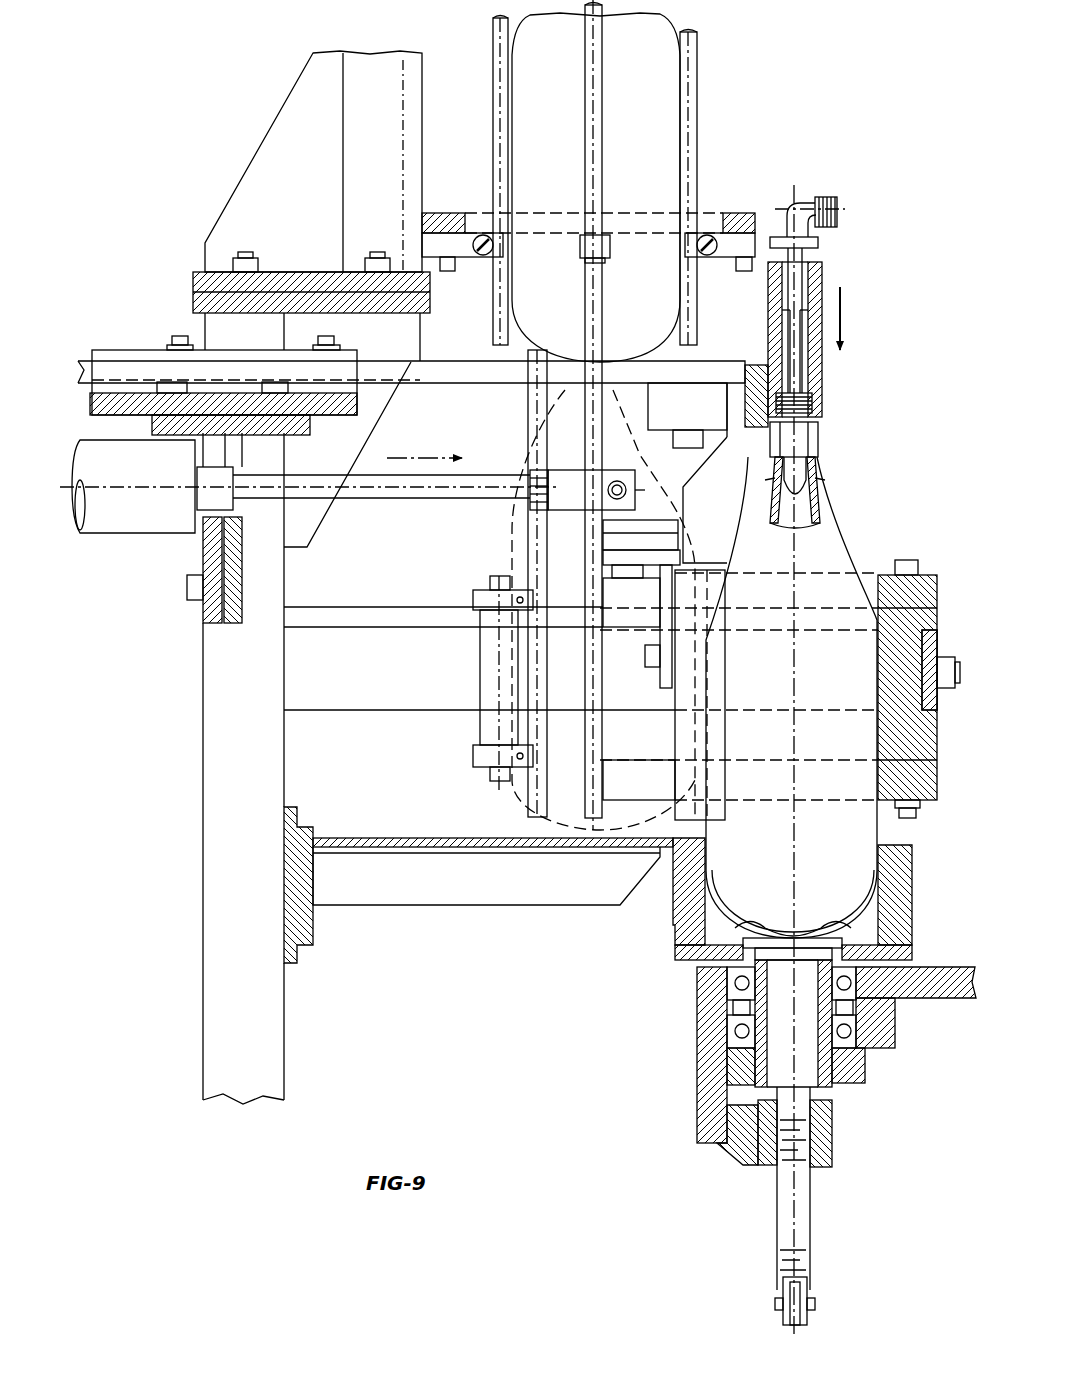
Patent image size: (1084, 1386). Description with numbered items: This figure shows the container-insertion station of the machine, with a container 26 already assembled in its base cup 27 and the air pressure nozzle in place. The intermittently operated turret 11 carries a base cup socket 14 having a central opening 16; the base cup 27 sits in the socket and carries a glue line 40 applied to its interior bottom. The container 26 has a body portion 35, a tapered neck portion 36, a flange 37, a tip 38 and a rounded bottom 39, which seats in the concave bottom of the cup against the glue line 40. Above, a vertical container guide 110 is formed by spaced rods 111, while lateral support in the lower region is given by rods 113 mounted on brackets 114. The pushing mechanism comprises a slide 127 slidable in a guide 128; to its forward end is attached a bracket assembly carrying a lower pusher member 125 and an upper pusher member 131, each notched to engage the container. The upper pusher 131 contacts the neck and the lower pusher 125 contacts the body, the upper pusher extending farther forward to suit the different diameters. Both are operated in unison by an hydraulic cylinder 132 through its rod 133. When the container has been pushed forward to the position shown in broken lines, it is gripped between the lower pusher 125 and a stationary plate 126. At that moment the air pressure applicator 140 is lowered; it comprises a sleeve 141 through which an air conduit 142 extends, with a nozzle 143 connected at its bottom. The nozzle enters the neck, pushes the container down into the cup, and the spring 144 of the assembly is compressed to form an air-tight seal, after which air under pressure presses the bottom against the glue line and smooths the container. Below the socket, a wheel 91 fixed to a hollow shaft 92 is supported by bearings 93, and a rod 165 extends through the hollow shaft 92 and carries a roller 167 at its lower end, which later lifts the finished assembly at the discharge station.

The vertical container guide 110 is at (490, 60).
The spaced rods 111 is at (700, 62).
The container 26 is at (650, 135).
The air conduit 142 is at (807, 256).
The air pressure applicator 140 is at (827, 280).
The sleeve 141 is at (820, 386).
The spring 144 is at (823, 410).
The tip 38 is at (817, 470).
The flange 37 is at (821, 505).
The tapered neck portion 36 is at (821, 542).
The nozzle 143 is at (778, 505).
The upper pusher member 131 is at (737, 368).
The rounded bottom 39 is at (643, 350).
The guide 128 is at (132, 372).
The slide 127 is at (452, 385).
The rods 113 is at (528, 449).
The rod 133 is at (402, 498).
The hydraulic cylinder 132 is at (120, 525).
The brackets 114 is at (475, 598).
The stationary plate 126 is at (877, 680).
The body portion 35 is at (774, 731).
The lower pusher member 125 is at (718, 787).
The central opening 16 is at (883, 838).
The base cup socket 14 is at (902, 877).
The base cup 27 is at (880, 918).
The turret 11 is at (937, 967).
The glue line 40 is at (770, 925).
The bearings 93 is at (735, 1030).
The wheel 91 is at (722, 1075).
The hollow shaft 92 is at (757, 1065).
The rod 165 is at (778, 1205).
The roller 167 is at (806, 1290).